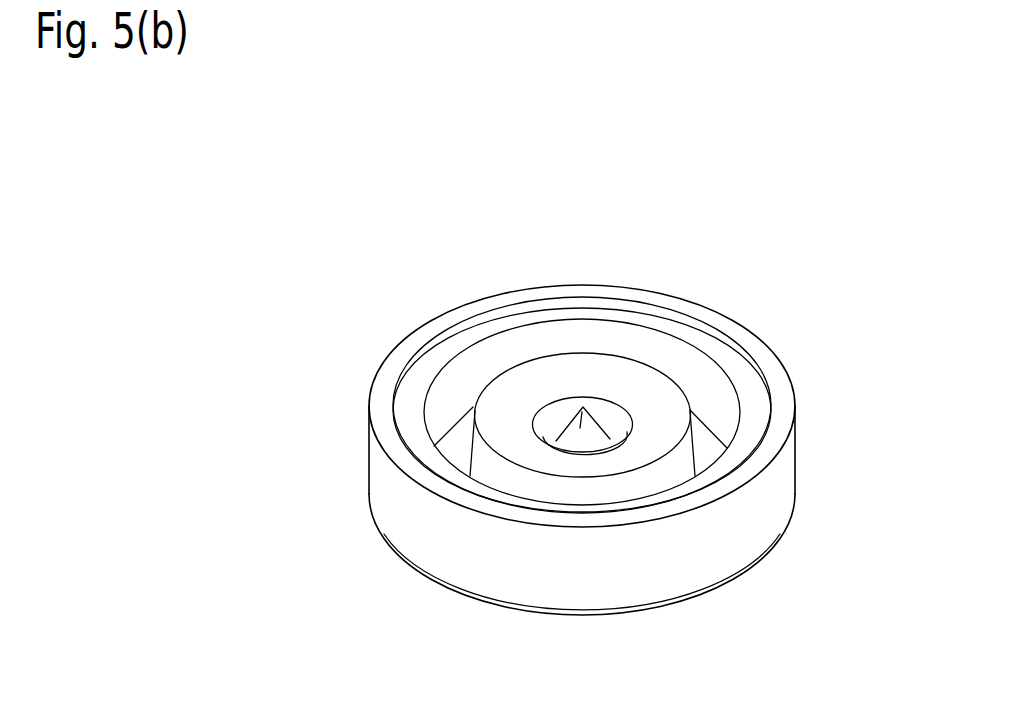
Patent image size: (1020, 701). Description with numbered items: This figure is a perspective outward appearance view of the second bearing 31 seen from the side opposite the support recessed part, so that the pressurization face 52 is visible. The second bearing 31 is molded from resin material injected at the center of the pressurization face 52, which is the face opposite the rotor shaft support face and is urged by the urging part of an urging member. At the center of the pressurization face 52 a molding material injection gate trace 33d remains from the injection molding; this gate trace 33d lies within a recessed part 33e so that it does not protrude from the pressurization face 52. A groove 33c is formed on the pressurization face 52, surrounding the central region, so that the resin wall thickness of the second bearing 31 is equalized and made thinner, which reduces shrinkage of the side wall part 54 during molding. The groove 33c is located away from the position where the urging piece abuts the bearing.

The second bearing 31 is at (264, 119).
The groove 33c is at (457, 380).
The molding material injection gate trace 33d is at (582, 407).
The recessed part 33e is at (607, 405).
The pressurization face 52 is at (630, 378).
The side wall part 54 is at (797, 467).